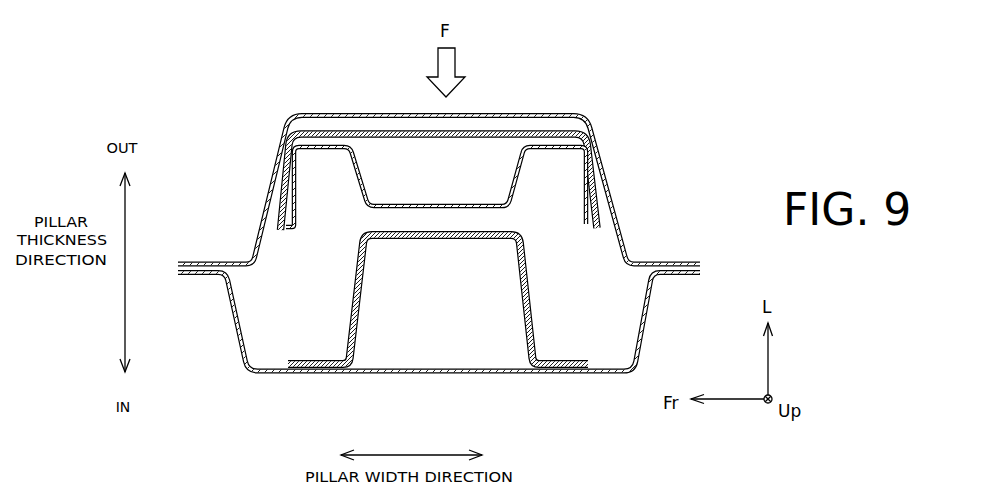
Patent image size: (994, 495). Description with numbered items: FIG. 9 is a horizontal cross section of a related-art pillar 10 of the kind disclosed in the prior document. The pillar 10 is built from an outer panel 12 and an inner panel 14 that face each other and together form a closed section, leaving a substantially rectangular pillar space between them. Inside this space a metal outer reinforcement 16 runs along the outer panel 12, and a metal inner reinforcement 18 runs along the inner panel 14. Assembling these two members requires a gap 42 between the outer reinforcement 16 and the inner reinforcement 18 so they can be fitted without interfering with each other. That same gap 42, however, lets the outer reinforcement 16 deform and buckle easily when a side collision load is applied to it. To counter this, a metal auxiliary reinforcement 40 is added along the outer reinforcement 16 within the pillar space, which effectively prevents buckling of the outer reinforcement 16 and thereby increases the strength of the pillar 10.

The pillar 10 is at (368, 83).
The outer panel 12 is at (303, 108).
The inner panel 14 is at (513, 374).
The outer reinforcement 16 is at (524, 127).
The inner reinforcement 18 is at (513, 267).
The auxiliary reinforcement 40 is at (548, 148).
The gap 42 is at (407, 222).